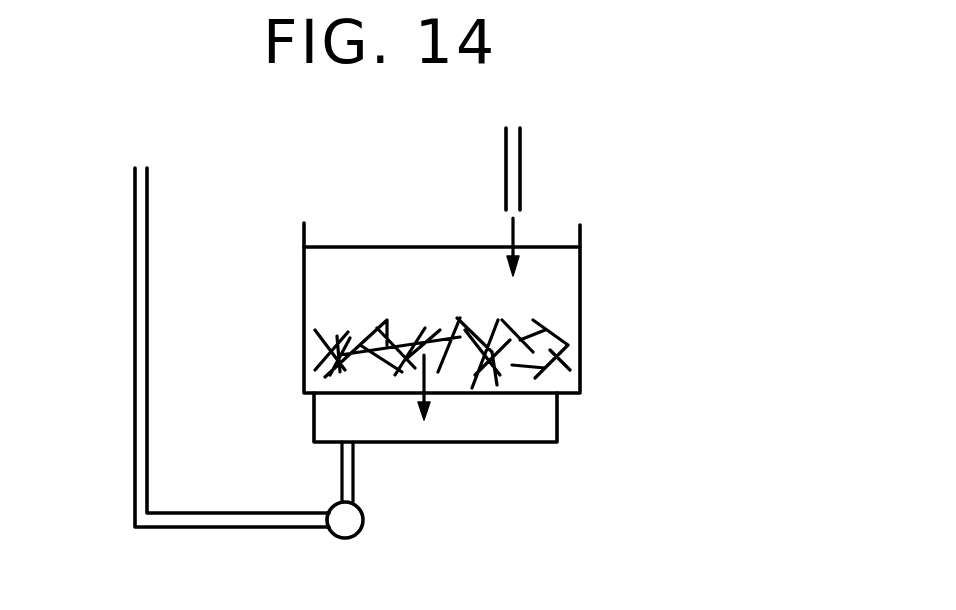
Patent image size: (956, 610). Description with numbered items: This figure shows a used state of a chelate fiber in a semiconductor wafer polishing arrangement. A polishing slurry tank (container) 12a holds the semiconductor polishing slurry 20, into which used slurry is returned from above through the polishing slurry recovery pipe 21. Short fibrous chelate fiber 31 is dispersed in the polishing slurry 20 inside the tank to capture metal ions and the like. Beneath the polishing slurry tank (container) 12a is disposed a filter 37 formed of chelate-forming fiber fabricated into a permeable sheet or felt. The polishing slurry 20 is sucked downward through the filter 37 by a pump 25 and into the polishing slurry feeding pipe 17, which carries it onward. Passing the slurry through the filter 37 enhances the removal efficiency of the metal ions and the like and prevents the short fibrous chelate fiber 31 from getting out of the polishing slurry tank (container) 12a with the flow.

The polishing slurry tank (container) 12a is at (583, 226).
The polishing slurry 20 is at (548, 305).
The polishing slurry recovery pipe 21 is at (521, 165).
The short fibrous chelate fiber 31 is at (553, 363).
The filter 37 is at (338, 417).
The pump 25 is at (363, 512).
The polishing slurry feeding pipe 17 is at (135, 458).